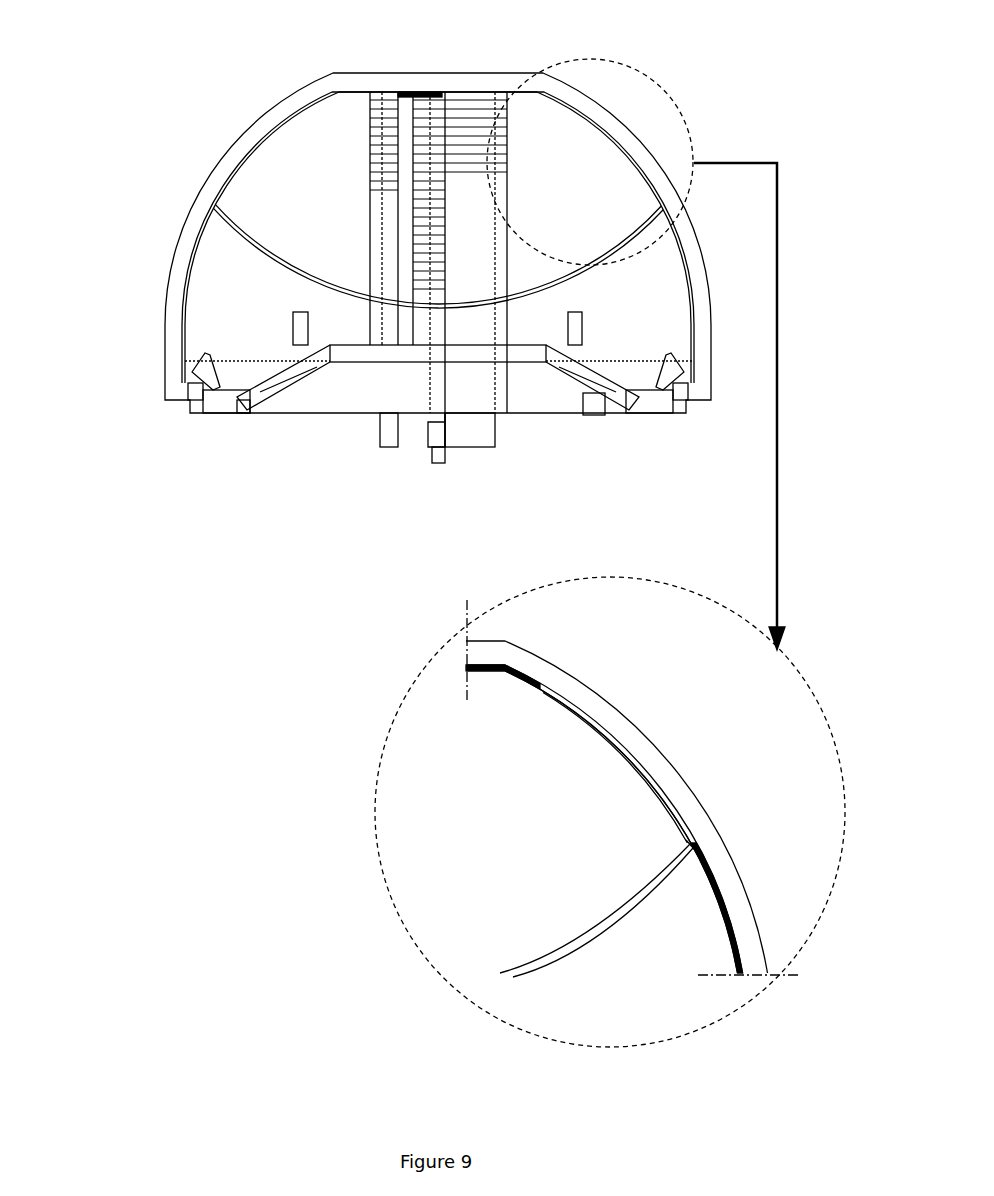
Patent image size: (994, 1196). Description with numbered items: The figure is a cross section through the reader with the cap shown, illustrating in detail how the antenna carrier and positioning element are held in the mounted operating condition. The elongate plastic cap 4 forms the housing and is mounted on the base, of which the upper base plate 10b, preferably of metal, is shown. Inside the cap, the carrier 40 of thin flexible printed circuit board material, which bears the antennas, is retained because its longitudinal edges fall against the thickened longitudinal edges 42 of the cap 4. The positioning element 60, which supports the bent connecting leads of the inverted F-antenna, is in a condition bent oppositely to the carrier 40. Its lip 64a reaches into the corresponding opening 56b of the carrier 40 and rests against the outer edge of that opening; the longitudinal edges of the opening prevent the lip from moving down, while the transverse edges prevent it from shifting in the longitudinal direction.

The cap 4 is at (250, 127).
The carrier 40 is at (193, 240).
The positioning element 60 is at (337, 290).
The thickened longitudinal edges of the cap 42 is at (195, 385).
The upper base plate 10b is at (290, 373).
The opening 56b is at (627, 760).
The lip 64a is at (687, 862).